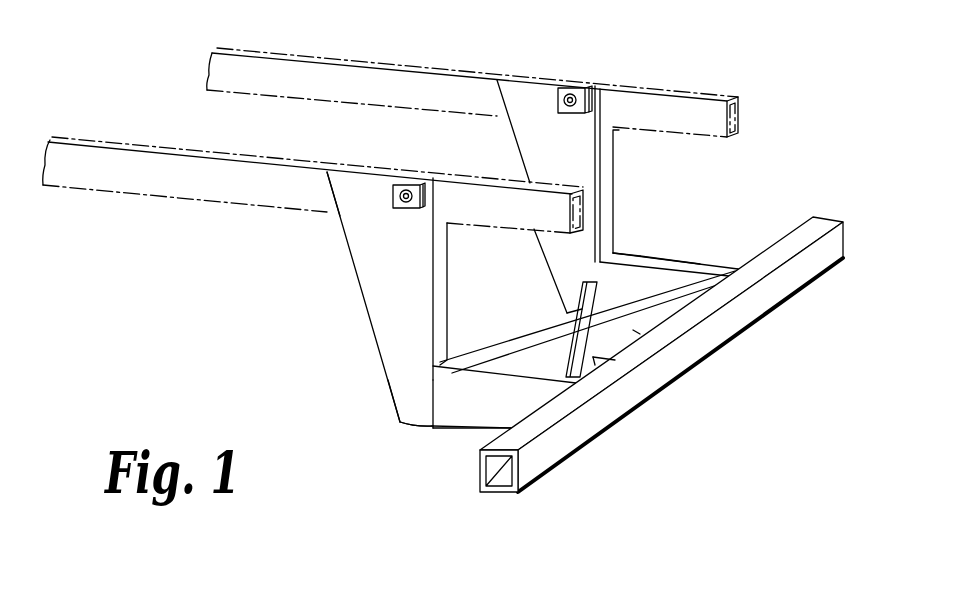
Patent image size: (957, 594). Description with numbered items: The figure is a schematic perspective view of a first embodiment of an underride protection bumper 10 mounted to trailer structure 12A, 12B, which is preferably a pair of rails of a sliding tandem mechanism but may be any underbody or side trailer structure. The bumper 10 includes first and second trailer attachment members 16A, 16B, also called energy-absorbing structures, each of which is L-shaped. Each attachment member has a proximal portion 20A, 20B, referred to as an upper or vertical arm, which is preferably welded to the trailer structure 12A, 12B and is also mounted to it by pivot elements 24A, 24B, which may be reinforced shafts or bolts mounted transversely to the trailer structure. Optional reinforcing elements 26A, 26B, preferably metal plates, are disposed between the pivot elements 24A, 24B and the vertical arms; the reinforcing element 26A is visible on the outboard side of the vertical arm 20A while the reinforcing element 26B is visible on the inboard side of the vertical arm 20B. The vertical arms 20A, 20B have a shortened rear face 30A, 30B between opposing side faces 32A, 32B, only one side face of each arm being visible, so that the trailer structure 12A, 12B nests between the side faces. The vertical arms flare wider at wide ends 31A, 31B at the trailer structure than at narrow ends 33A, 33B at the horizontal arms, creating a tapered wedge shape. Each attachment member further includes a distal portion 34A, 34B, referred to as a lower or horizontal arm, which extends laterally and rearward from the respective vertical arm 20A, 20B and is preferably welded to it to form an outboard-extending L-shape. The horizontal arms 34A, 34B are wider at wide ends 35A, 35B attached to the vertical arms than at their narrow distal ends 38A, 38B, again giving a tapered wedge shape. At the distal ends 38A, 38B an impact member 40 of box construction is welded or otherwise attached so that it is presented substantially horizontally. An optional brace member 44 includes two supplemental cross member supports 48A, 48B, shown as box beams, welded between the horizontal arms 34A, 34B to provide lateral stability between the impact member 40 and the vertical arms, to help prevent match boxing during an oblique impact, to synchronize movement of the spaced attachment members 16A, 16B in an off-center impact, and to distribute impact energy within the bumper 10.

The underride protection bumper 10 is at (280, 310).
The trailer structure 12A is at (192, 184).
The trailer structure 12B is at (322, 52).
The first trailer attachment member 16A is at (390, 398).
The second trailer attachment member 16B is at (640, 254).
The proximal portion 20A is at (413, 267).
The proximal portion 20B is at (577, 164).
The pivot element 24A is at (414, 192).
The pivot element 24B is at (584, 88).
The reinforcing element 26A is at (412, 193).
The reinforcing element 26B is at (566, 95).
The rear face 30A is at (447, 267).
The rear face 30B is at (607, 155).
The wide end 31A is at (327, 176).
The wide end 31B is at (598, 100).
The side face 32A is at (398, 302).
The side face 32B is at (570, 177).
The narrow end 33A is at (398, 418).
The narrow end 33B is at (572, 312).
The distal portion 34A is at (494, 412).
The distal portion 34B is at (644, 294).
The wide end 35A is at (435, 427).
The wide end 35B is at (613, 253).
The distal end 38A is at (595, 365).
The distal end 38B is at (730, 268).
The impact member 40 is at (537, 462).
The brace member 44 is at (508, 327).
The cross member support 48A is at (615, 360).
The cross member support 48B is at (633, 330).